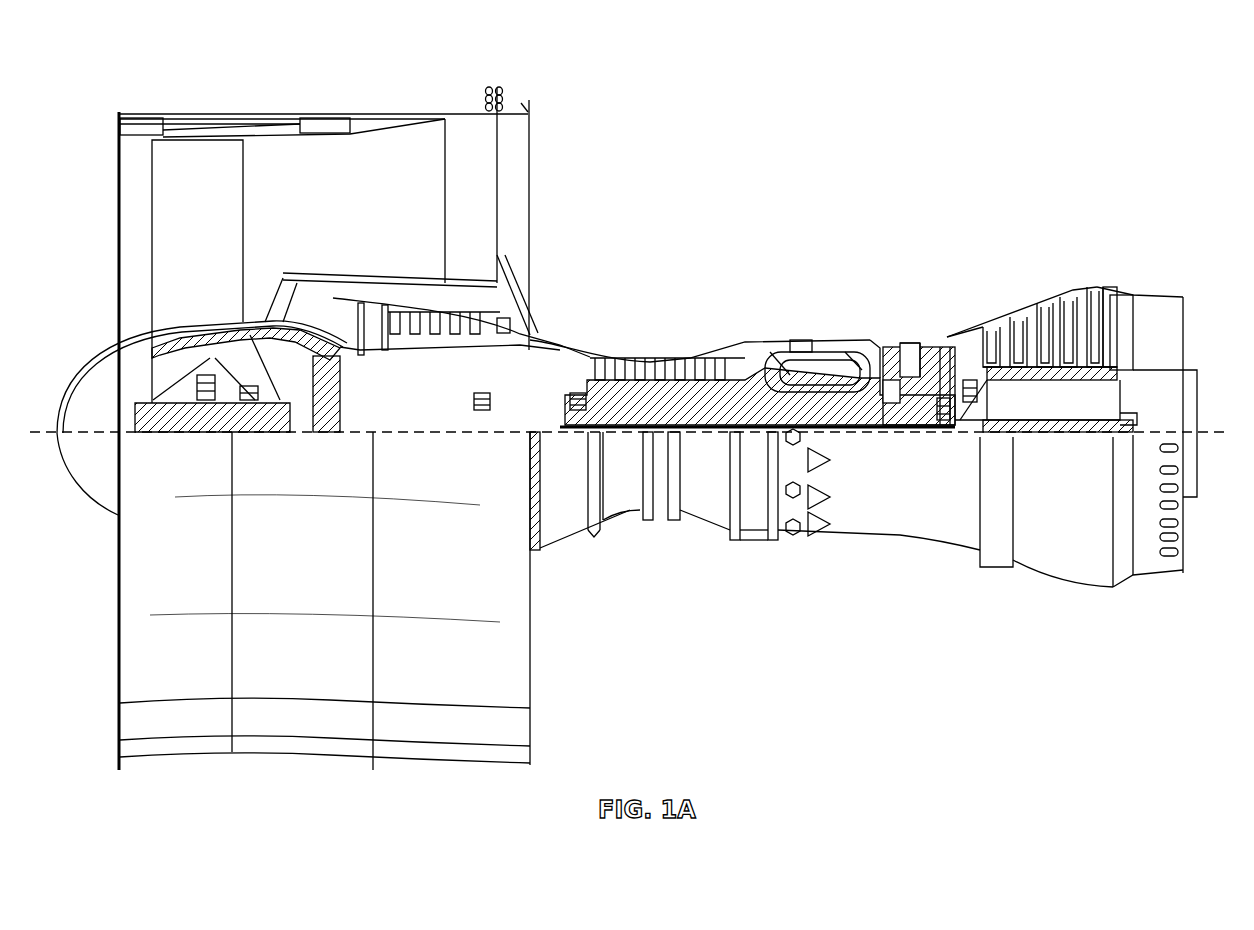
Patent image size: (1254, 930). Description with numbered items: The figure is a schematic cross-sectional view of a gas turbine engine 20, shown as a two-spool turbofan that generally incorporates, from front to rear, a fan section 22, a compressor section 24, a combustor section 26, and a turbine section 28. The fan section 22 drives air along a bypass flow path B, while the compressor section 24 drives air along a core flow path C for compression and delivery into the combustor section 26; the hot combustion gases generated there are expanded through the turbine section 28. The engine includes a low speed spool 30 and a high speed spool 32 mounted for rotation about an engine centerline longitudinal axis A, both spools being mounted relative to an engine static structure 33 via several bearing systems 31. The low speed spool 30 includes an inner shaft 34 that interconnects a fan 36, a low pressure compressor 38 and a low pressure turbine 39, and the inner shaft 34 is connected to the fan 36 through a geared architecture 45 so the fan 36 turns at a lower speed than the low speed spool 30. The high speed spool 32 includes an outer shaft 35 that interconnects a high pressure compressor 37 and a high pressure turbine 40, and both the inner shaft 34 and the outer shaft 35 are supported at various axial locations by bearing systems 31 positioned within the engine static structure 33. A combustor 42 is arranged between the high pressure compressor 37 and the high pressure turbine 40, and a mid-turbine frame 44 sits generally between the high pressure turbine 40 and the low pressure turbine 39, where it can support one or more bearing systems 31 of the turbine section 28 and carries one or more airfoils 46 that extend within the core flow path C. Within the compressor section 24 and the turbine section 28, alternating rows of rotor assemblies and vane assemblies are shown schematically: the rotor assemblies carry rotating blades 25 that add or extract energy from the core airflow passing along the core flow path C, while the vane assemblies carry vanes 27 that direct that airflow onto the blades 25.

The gas turbine engine 20 is at (980, 150).
The fan section 22 is at (470, 100).
The compressor section 24 is at (827, 220).
The blades 25 is at (398, 330).
The combustor section 26 is at (897, 210).
The vanes 27 is at (420, 328).
The turbine section 28 is at (1130, 222).
The low speed spool 30 is at (708, 447).
The bearing systems 31 is at (212, 402).
The high speed spool 32 is at (797, 340).
The engine static structure 33 is at (751, 545).
The inner shaft 34 is at (560, 415).
The outer shaft 35 is at (905, 410).
The fan 36 is at (183, 226).
The high pressure compressor 37 is at (655, 366).
The low pressure compressor 38 is at (442, 328).
The low pressure turbine 39 is at (1047, 320).
The high pressure turbine 40 is at (906, 352).
The combustor 42 is at (836, 352).
The mid-turbine frame 44 is at (952, 331).
The geared architecture 45 is at (326, 433).
The airfoils 46 is at (945, 360).
The engine centerline longitudinal axis A is at (1228, 432).
The bypass flow path B is at (380, 197).
The core flow path C is at (520, 340).